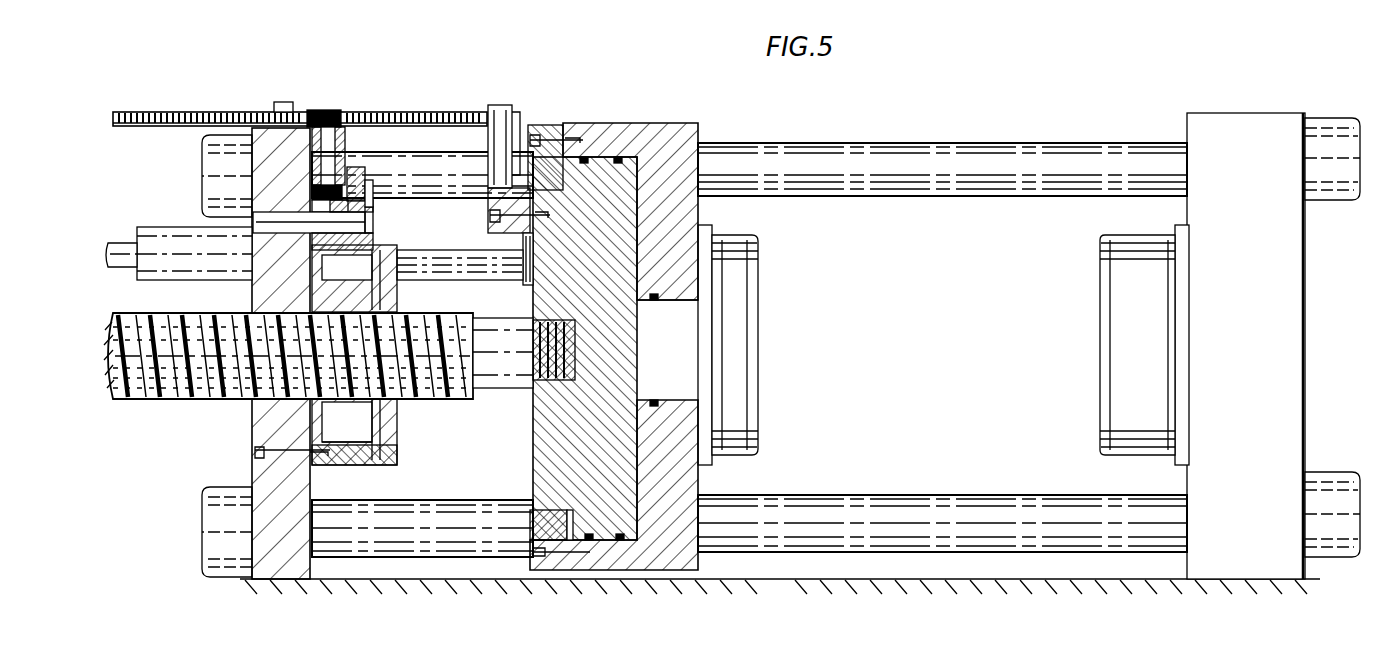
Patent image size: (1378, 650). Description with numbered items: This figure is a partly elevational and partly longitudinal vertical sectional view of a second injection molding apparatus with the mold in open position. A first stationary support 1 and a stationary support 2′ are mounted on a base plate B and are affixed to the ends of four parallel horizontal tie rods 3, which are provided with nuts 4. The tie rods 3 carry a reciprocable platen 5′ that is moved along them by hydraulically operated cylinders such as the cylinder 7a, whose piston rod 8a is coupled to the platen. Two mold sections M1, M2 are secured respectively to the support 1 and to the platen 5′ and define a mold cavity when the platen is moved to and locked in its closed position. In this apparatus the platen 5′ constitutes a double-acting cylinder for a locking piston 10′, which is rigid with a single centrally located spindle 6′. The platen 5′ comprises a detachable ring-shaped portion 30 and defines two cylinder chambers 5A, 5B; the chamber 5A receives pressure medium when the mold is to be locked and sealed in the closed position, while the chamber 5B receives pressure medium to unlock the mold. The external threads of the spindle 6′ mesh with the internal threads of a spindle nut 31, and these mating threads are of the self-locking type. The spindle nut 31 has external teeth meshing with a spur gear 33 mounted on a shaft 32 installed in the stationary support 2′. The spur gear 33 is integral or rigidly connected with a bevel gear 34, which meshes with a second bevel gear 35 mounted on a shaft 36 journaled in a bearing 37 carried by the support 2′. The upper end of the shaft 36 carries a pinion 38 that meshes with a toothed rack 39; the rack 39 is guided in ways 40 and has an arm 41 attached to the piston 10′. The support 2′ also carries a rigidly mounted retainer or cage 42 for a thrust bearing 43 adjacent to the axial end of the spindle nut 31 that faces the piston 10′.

The first stationary support 1 is at (1222, 122).
The stationary support 2′ is at (312, 490).
The tie rods 3 is at (972, 142).
The nuts 4 is at (1328, 122).
The reciprocable platen 5′ is at (676, 128).
The cylinder chamber 5A is at (648, 222).
The cylinder chamber 5B is at (580, 522).
The spindle 6′ is at (506, 360).
The hydraulically operated cylinder 7a is at (502, 278).
The piston rod 8a is at (536, 246).
The locking piston 10′ is at (600, 140).
The detachable ring-shaped portion 30 is at (546, 128).
The spindle nut 31 is at (330, 414).
The shaft 32 is at (286, 230).
The spur gear 33 is at (364, 168).
The bevel gear 34 is at (373, 190).
The second bevel gear 35 is at (312, 201).
The shaft 36 is at (310, 176).
The bearing 37 is at (310, 152).
The pinion 38 is at (326, 112).
The toothed rack 39 is at (182, 111).
The ways 40 is at (282, 101).
The arm 41 is at (498, 110).
The retainer or cage 42 is at (388, 454).
The thrust bearing 43 is at (384, 414).
The mold section M1 is at (1115, 307).
The mold section M2 is at (740, 300).
The base plate B is at (770, 584).